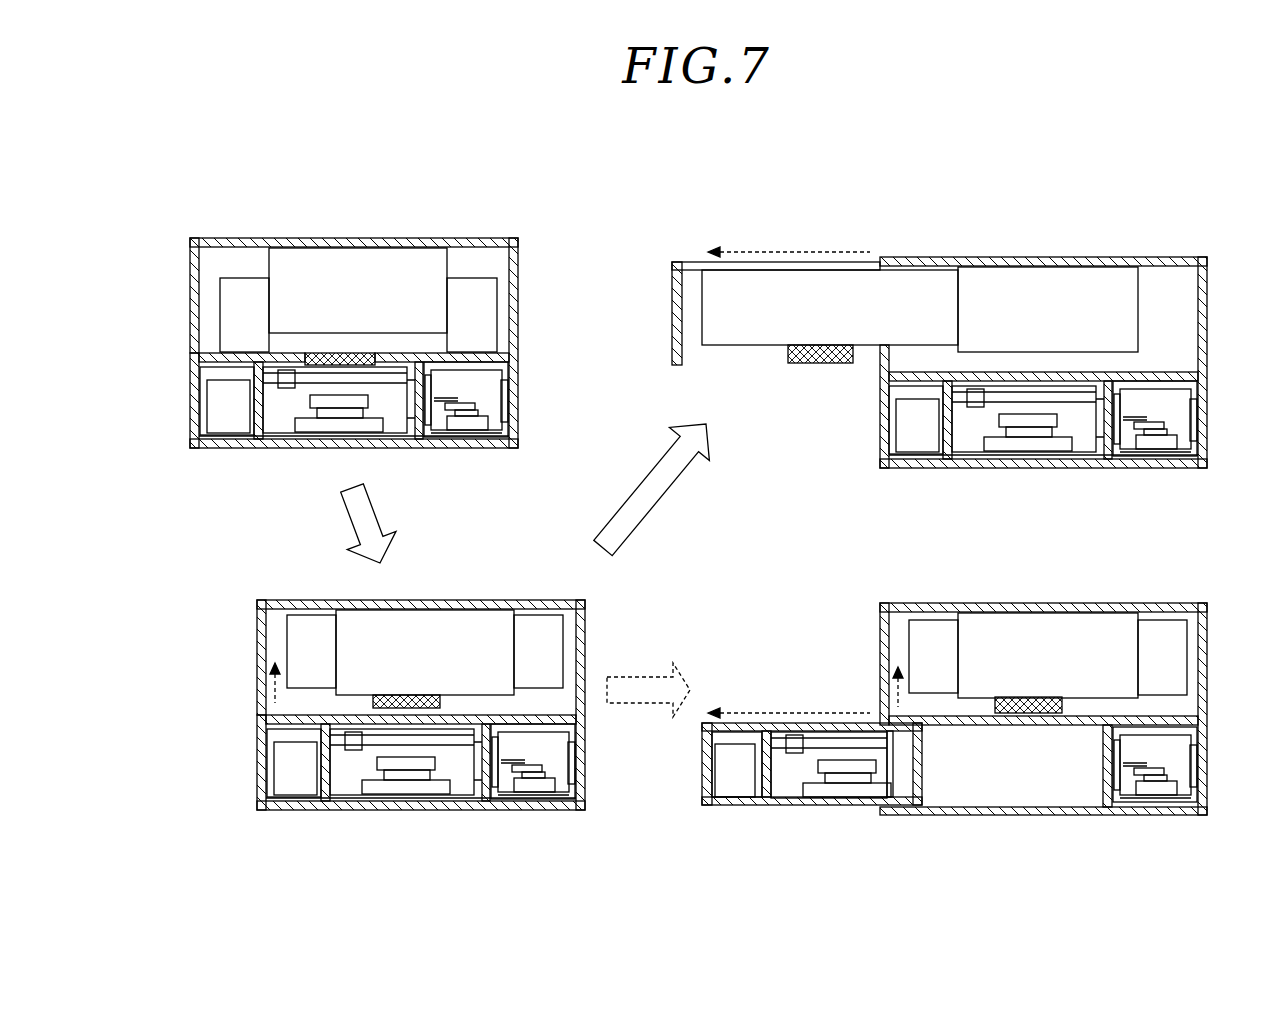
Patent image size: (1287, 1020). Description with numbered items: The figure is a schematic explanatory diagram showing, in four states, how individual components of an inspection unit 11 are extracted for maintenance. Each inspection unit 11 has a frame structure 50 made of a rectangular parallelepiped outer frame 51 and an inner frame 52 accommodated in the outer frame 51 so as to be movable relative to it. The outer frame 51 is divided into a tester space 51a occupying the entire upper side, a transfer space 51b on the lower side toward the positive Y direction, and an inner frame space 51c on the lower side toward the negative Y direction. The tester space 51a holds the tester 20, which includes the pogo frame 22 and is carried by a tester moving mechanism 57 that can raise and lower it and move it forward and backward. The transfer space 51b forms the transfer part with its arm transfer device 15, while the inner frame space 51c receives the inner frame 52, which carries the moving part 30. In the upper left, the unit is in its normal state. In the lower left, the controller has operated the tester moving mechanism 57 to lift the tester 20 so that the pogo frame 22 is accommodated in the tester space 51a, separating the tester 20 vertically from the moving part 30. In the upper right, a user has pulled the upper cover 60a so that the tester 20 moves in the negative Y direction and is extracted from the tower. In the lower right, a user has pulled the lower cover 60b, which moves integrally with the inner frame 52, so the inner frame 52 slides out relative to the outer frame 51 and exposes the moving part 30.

The inspection unit 11 is at (166, 174).
The arm transfer device 15 is at (466, 418).
The tester 20 is at (475, 295).
The pogo frame 22 is at (341, 358).
The moving part 30 is at (330, 421).
The frame structure 50 is at (276, 484).
The outer frame 51 is at (268, 437).
The tester space 51a is at (507, 260).
The transfer space 51b is at (497, 404).
The inner frame space 51c is at (245, 357).
The inner frame 52 is at (248, 435).
The tester moving mechanism 57 is at (351, 262).
The upper cover 60a is at (191, 258).
The lower cover 60b is at (191, 427).